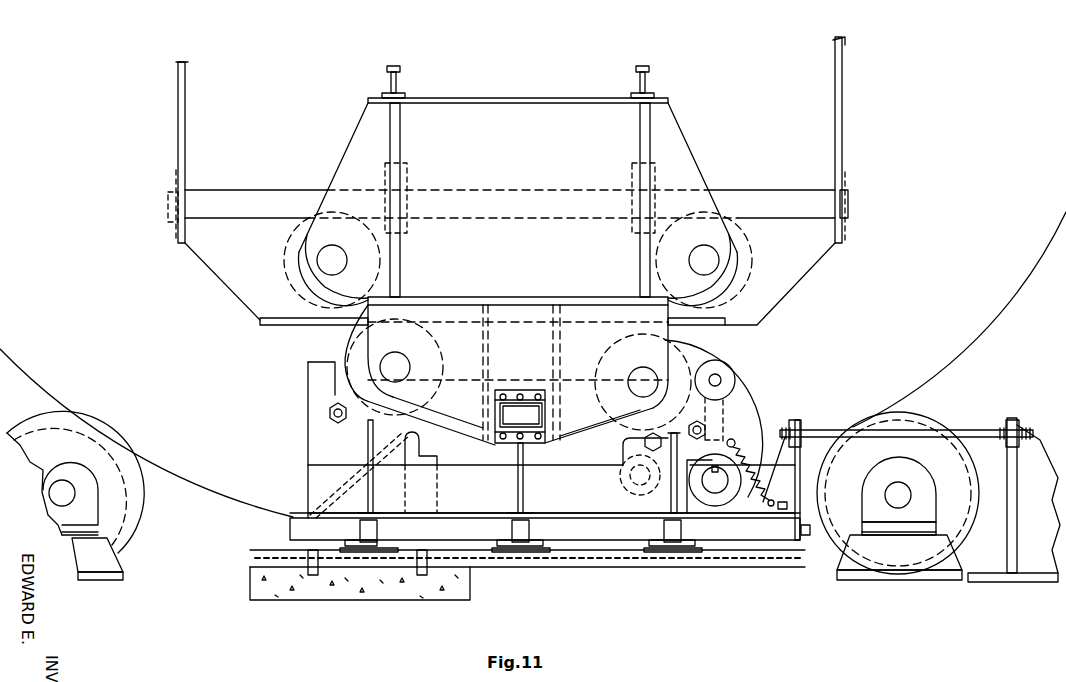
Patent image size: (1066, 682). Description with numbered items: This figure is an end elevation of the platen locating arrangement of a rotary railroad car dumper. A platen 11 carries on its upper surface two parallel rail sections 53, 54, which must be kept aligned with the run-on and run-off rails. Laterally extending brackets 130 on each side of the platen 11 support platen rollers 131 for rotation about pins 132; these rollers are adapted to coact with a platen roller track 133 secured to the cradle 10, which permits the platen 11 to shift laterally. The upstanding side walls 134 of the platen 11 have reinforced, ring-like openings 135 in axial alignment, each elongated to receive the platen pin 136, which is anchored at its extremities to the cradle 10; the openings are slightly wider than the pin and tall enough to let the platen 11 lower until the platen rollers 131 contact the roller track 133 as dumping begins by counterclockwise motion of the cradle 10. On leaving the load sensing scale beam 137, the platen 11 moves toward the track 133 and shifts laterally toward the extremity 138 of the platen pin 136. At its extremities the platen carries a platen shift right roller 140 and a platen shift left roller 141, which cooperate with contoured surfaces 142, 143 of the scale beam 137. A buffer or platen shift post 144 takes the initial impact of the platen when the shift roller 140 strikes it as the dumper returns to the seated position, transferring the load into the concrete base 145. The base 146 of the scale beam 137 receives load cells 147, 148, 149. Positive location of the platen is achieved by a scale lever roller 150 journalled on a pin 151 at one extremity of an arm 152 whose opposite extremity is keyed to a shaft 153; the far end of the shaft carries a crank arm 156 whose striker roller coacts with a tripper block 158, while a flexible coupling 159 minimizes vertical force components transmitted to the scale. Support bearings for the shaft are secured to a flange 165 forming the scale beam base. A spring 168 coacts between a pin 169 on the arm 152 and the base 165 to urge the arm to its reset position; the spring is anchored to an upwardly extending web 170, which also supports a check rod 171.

The cradle 10 is at (533, 364).
The platen 11 is at (491, 94).
The rail section 53 is at (394, 66).
The rail section 54 is at (645, 66).
The bracket 130 is at (350, 150).
The platen roller 131 is at (290, 250).
The pin 132 is at (318, 262).
The platen roller track 133 is at (689, 330).
The upstanding side wall 134 is at (400, 140).
The reinforced opening 135 is at (407, 170).
The platen pin 136 is at (775, 190).
The scale beam 137 is at (308, 450).
The extremity 138 is at (178, 193).
The platen shift right roller 140 is at (348, 362).
The platen shift left roller 141 is at (728, 362).
The contoured surface 142 is at (335, 398).
The contoured surface 143 is at (735, 392).
The buffer 144 is at (420, 447).
The concrete base 145 is at (460, 588).
The base 146 is at (590, 540).
The load cell 147 is at (380, 530).
The load cell 148 is at (530, 530).
The load cell 149 is at (683, 530).
The scale lever roller 150 is at (757, 372).
The pin 151 is at (690, 363).
The arm 152 is at (708, 428).
The shaft 153 is at (723, 492).
The crank arm 156 is at (665, 497).
The tripper block 158 is at (668, 438).
The flexible coupling 159 is at (620, 475).
The flange 165 is at (598, 513).
The spring 168 is at (792, 462).
The pin 169 is at (737, 440).
The web 170 is at (790, 492).
The check rod 171 is at (966, 430).